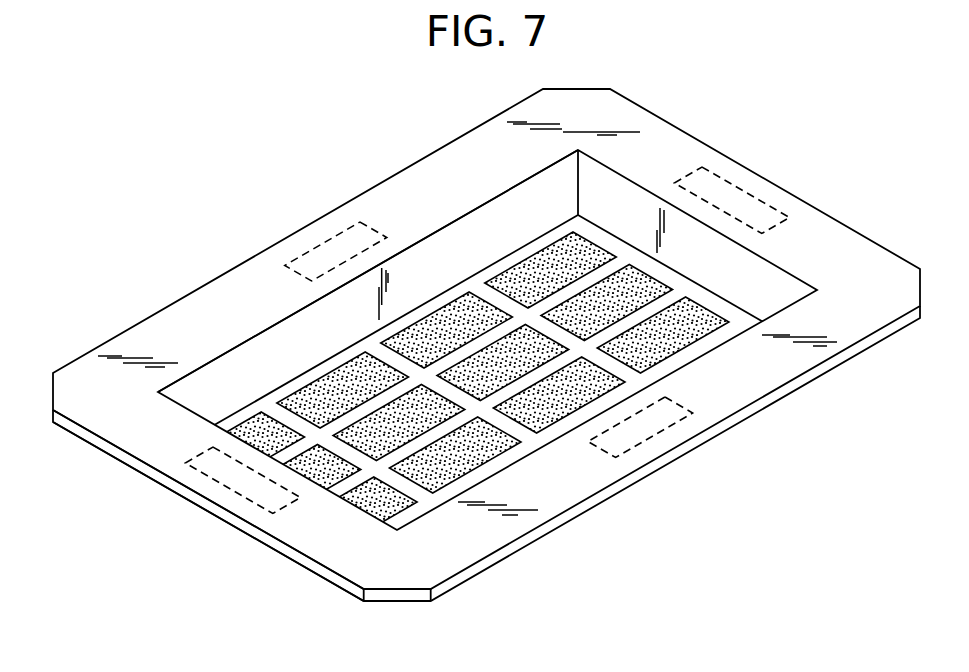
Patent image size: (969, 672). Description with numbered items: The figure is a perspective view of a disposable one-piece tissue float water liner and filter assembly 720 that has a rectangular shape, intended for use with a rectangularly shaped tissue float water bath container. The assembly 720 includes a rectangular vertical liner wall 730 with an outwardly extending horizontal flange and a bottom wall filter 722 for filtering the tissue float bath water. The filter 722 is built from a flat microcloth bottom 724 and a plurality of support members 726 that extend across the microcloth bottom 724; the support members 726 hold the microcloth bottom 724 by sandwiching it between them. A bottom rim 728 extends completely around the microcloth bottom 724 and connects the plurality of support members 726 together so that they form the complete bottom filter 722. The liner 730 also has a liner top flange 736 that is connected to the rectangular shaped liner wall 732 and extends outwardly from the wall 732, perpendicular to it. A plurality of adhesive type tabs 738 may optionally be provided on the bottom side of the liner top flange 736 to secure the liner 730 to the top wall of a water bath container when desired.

The liner and filter assembly 720 is at (333, 192).
The bottom wall filter 722 is at (588, 247).
The microcloth bottom 724 is at (652, 285).
The support members 726 is at (377, 395).
The bottom rim 728 is at (437, 302).
The liner wall 730 is at (107, 441).
The liner wall 732 is at (500, 224).
The liner top flange 736 is at (322, 532).
The adhesive type tabs 738 is at (632, 438).